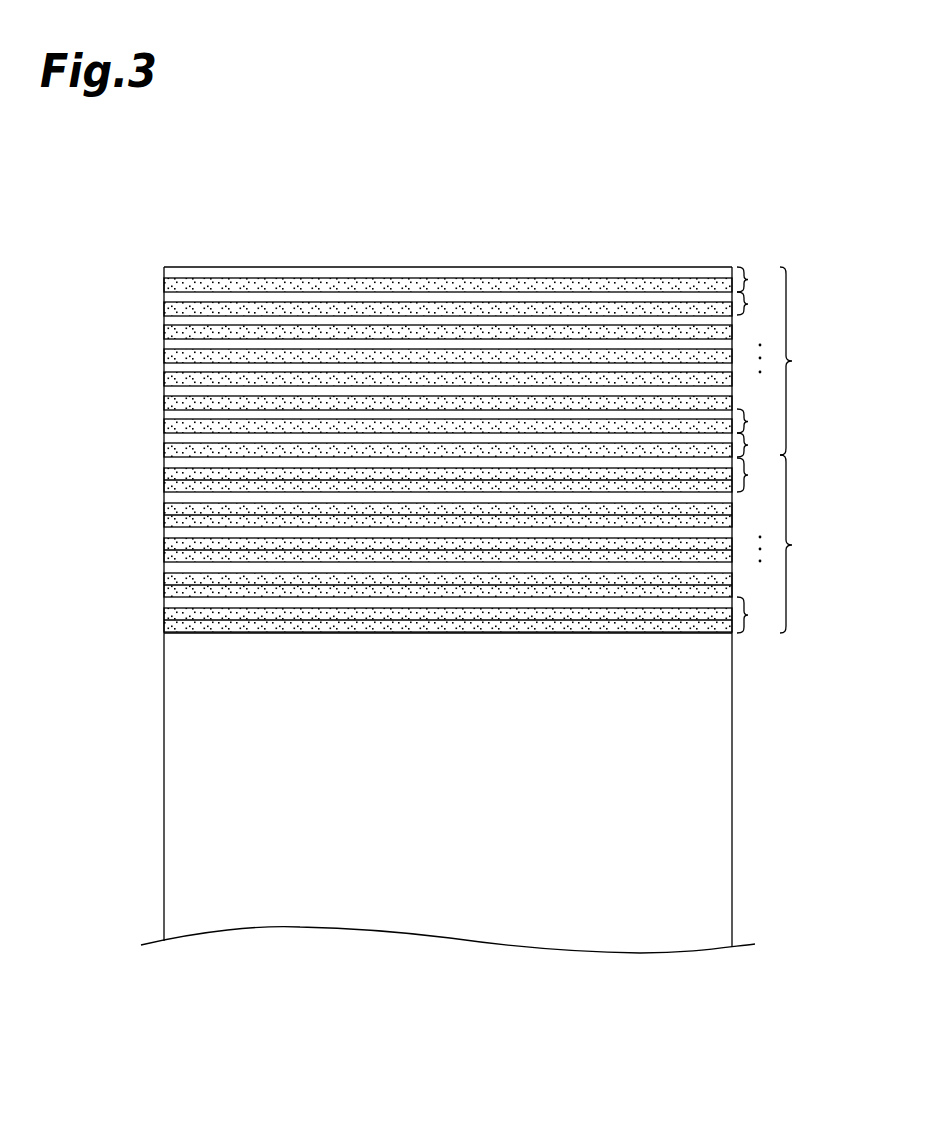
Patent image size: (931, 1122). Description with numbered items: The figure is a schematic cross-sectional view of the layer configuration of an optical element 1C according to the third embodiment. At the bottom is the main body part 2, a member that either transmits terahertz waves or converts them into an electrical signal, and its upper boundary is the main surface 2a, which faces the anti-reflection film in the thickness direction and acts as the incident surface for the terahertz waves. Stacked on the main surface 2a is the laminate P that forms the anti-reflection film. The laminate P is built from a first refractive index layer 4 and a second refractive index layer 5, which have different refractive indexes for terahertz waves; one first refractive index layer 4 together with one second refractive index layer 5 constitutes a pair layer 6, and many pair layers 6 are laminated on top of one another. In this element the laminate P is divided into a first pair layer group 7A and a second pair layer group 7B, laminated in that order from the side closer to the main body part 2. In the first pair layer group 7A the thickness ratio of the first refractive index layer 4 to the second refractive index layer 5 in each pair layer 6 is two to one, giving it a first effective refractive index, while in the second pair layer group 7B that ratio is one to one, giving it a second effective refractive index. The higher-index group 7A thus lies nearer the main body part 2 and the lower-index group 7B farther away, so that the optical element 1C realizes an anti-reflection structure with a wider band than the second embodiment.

The optical element 1C is at (220, 226).
The laminate P is at (146, 336).
The main body part 2 is at (180, 773).
The main surface 2a is at (217, 635).
The first refractive index layer 4 is at (329, 488).
The second refractive index layer 5 is at (386, 461).
The pair layer 6 is at (752, 448).
The first pair layer group 7A is at (794, 544).
The second pair layer group 7B is at (794, 361).